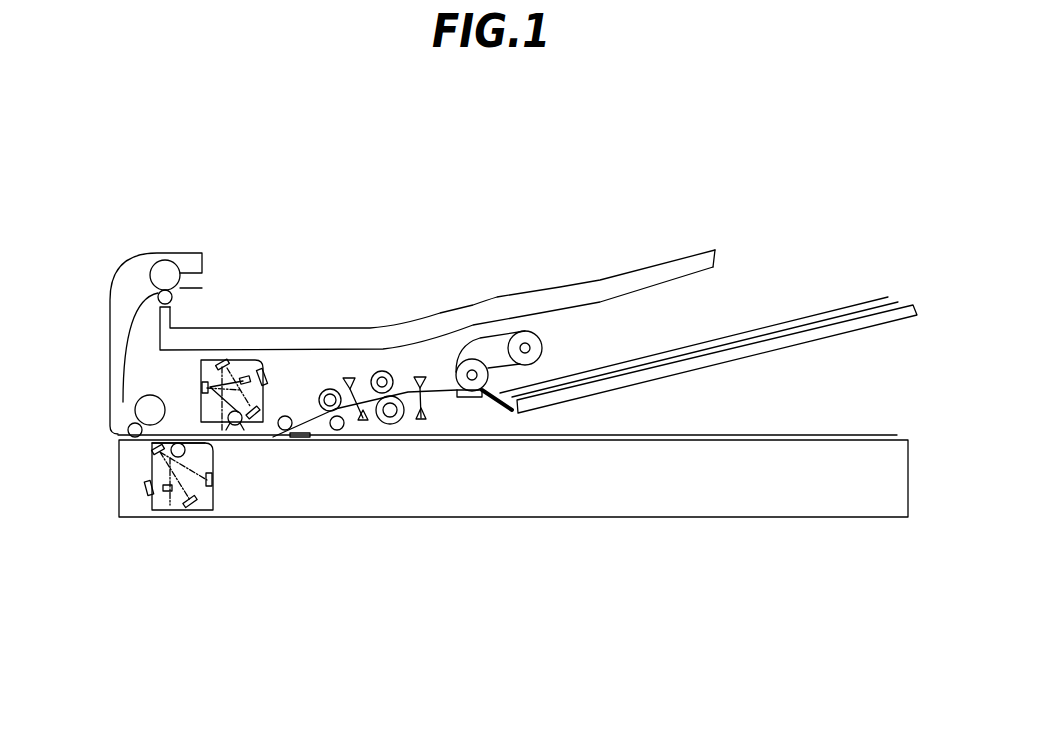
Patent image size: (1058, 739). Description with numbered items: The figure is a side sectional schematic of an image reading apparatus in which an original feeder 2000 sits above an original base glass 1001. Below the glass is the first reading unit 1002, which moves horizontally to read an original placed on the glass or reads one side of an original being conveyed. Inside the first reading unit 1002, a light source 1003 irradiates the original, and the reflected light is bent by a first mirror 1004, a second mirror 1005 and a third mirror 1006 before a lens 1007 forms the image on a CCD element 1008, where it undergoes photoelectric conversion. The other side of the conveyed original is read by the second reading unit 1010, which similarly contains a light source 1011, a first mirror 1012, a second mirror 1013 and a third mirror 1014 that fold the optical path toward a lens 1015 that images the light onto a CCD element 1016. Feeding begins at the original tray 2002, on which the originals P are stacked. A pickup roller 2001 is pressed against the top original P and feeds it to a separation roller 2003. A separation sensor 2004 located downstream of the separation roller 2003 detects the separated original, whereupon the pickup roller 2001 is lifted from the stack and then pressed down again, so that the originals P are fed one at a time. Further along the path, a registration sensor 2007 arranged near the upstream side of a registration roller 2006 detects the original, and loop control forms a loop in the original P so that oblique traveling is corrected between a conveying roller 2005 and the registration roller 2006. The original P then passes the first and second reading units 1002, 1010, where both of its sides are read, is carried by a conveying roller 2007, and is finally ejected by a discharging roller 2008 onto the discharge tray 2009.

The original feeder 2000 is at (384, 210).
The discharging roller 2008 is at (163, 262).
The registration roller 2006 is at (353, 347).
The discharge tray 2009 is at (670, 270).
The second reading unit 1010 is at (268, 398).
The first mirror 1012 is at (219, 361).
The lens 1015 is at (246, 377).
The CCD element 1016 is at (266, 380).
The third mirror 1014 is at (200, 388).
The light source 1011 is at (236, 426).
The second mirror 1013 is at (333, 389).
The conveying roller 2005 is at (384, 370).
The registration sensor 2007 is at (139, 402).
The separation sensor 2004 is at (421, 420).
The separation roller 2003 is at (475, 359).
The pickup roller 2001 is at (531, 332).
The original P is at (788, 322).
The original tray 2002 is at (912, 304).
The original base glass 1001 is at (585, 442).
The second mirror 1005 is at (153, 447).
The light source 1003 is at (185, 452).
The third mirror 1006 is at (195, 445).
The CCD element 1008 is at (147, 495).
The lens 1007 is at (167, 493).
The first mirror 1004 is at (192, 505).
The first reading unit 1002 is at (212, 487).